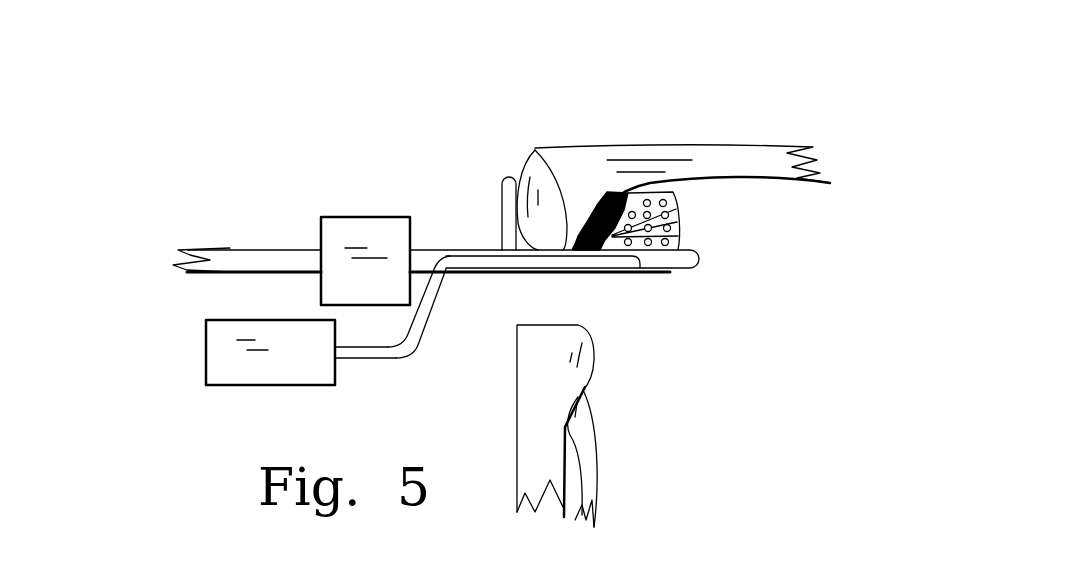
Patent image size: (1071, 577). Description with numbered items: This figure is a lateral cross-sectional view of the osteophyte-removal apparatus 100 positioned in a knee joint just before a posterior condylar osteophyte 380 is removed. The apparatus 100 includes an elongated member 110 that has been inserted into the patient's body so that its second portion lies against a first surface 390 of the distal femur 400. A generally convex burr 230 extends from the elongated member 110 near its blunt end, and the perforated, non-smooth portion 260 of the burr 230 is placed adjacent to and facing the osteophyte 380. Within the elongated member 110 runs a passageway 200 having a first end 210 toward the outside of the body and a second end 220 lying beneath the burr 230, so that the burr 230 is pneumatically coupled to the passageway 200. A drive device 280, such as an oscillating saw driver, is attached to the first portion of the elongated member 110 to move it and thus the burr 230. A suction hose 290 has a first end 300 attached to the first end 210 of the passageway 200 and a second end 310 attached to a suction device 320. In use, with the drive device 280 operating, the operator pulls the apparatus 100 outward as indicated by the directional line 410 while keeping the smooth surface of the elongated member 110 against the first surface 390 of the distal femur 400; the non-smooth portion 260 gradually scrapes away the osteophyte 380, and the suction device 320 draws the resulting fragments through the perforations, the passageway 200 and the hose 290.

The apparatus for removing an osteophyte 100 is at (470, 112).
The elongated member 110 is at (757, 340).
The passageway 200 is at (500, 269).
The first end of the passageway 210 is at (437, 274).
The second end of the passageway 220 is at (648, 253).
The burr 230 is at (688, 192).
The perforated, non-smooth portion 260 is at (643, 197).
The drive device 280 is at (370, 217).
The suction hose 290 is at (420, 350).
The first end of the suction hose 300 is at (449, 257).
The second end of the suction hose 310 is at (337, 358).
The suction device 320 is at (257, 387).
The posterior condylar osteophyte 380 is at (585, 170).
The first surface of the distal femur 390 is at (546, 154).
The distal femur 400 is at (567, 122).
The directional line 410 is at (150, 262).